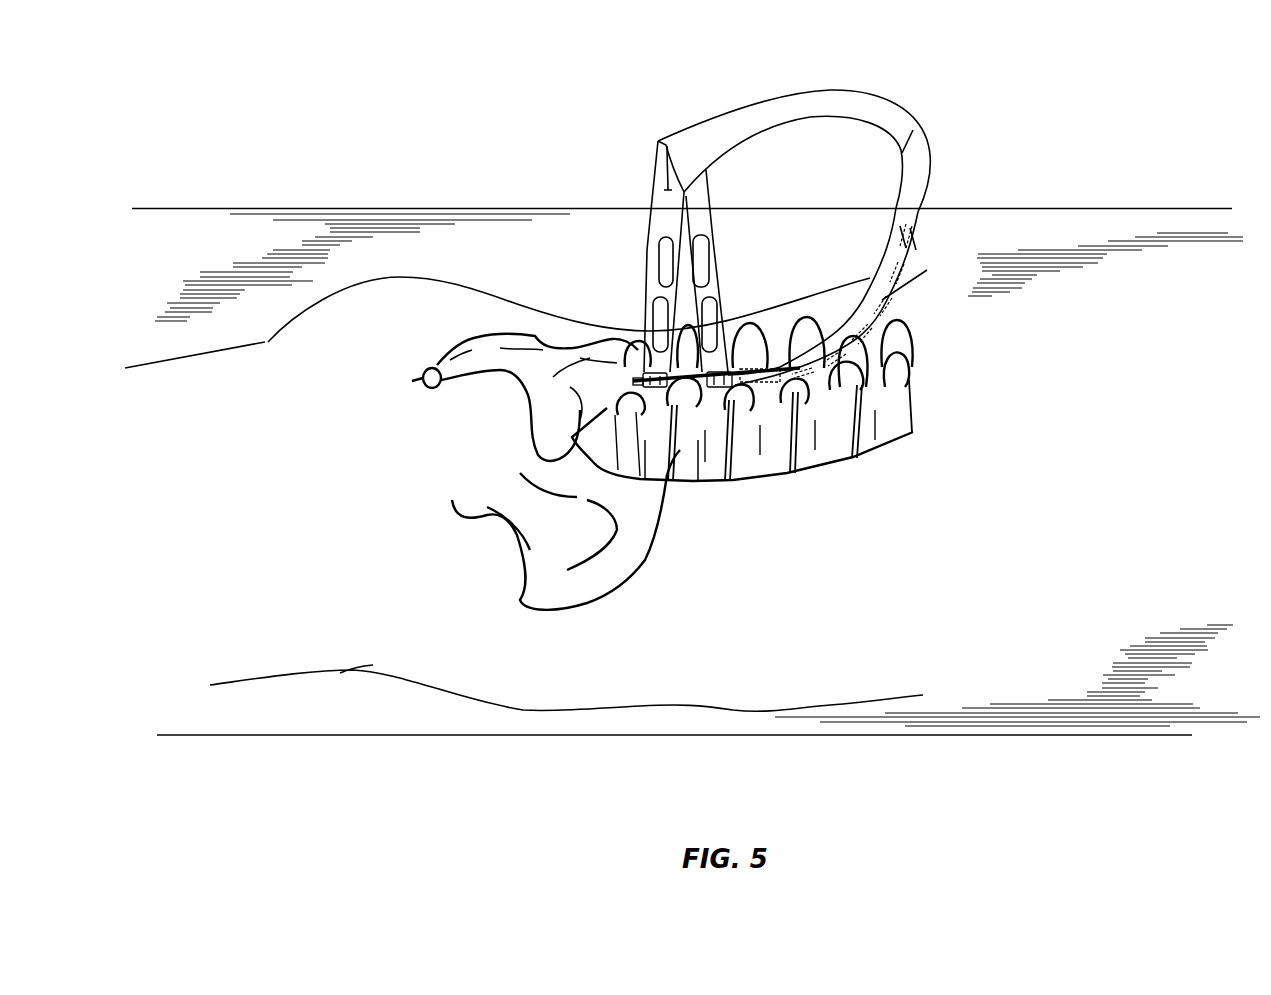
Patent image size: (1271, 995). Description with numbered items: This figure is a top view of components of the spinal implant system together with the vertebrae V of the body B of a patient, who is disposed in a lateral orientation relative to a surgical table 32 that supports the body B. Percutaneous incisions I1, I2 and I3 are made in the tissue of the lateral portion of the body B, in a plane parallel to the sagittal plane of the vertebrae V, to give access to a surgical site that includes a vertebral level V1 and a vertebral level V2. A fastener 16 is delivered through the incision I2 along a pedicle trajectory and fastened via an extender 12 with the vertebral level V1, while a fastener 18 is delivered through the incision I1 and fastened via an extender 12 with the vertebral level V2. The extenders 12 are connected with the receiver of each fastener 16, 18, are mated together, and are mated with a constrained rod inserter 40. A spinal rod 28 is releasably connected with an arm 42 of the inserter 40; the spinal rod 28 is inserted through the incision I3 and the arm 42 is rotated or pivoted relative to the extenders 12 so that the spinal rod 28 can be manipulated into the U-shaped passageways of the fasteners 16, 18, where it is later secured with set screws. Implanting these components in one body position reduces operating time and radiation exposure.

The extender 12 is at (776, 256).
The percutaneous incision I1 is at (648, 332).
The percutaneous incision I2 is at (720, 322).
The percutaneous incision I3 is at (905, 277).
The fastener 16 is at (747, 340).
The fastener 18 is at (625, 345).
The spinal rod 28 is at (687, 383).
The surgical table 32 is at (182, 237).
The constrained rod inserter 40 is at (847, 102).
The arm 42 is at (877, 264).
The vertebrae V is at (900, 460).
The vertebral level V1 is at (697, 470).
The vertebral level V2 is at (633, 467).
The body B is at (926, 553).